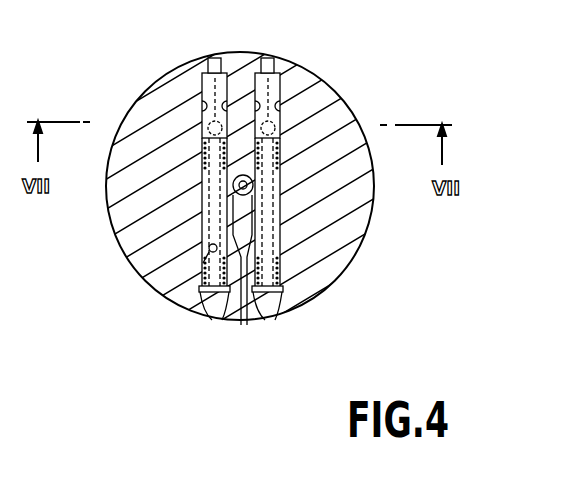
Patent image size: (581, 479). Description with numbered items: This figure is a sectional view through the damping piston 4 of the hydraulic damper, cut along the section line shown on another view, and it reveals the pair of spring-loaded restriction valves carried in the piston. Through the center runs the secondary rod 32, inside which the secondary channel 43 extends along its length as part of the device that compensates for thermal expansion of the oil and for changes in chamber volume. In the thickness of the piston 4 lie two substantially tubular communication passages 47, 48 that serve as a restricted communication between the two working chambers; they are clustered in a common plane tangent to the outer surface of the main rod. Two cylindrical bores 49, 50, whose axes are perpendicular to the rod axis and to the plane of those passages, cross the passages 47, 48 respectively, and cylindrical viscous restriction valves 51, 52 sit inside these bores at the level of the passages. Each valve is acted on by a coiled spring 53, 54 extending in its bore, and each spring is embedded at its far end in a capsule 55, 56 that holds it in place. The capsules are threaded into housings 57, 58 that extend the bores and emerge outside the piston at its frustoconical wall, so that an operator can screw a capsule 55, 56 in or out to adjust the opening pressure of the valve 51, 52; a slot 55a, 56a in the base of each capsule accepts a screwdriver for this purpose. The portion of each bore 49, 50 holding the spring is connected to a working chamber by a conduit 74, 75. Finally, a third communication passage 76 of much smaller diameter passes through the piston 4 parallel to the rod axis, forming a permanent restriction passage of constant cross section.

The damping piston 4 is at (327, 248).
The secondary rod 32 is at (282, 180).
The secondary channel 43 is at (202, 170).
The communication passage 47 is at (293, 128).
The communication passage 48 is at (203, 120).
The cylindrical bore 49 is at (293, 217).
The cylindrical bore 50 is at (202, 207).
The viscous restriction valve 51 is at (282, 84).
The viscous restriction valve 52 is at (203, 80).
The coiled spring 53 is at (282, 148).
The coiled spring 54 is at (202, 128).
The capsule 55 is at (283, 300).
The slot 55a is at (270, 297).
The capsule 56 is at (215, 307).
The slot 56a is at (217, 310).
The housing 57 is at (273, 298).
The housing 58 is at (228, 312).
The conduit 74 is at (287, 257).
The conduit 75 is at (137, 272).
The third communication passage 76 is at (243, 288).